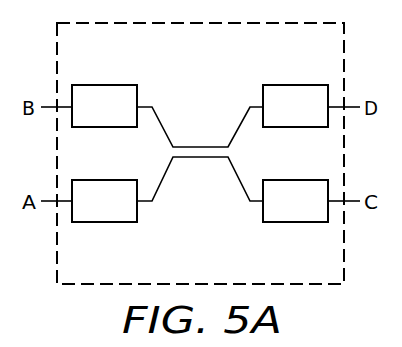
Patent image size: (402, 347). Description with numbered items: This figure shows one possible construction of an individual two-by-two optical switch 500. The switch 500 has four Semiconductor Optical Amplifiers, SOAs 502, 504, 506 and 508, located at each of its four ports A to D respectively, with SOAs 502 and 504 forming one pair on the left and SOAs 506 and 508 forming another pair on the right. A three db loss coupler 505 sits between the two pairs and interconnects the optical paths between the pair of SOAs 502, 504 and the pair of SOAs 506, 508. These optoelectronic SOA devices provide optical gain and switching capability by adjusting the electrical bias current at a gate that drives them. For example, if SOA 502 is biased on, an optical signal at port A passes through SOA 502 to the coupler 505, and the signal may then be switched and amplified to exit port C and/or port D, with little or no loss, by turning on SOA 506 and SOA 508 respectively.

The 2×2 switch 500 is at (182, 62).
The semiconductor optical amplifier 502 is at (101, 223).
The semiconductor optical amplifier 504 is at (105, 84).
The 3 db coupler 505 is at (165, 133).
The semiconductor optical amplifier 506 is at (297, 223).
The semiconductor optical amplifier 508 is at (297, 84).